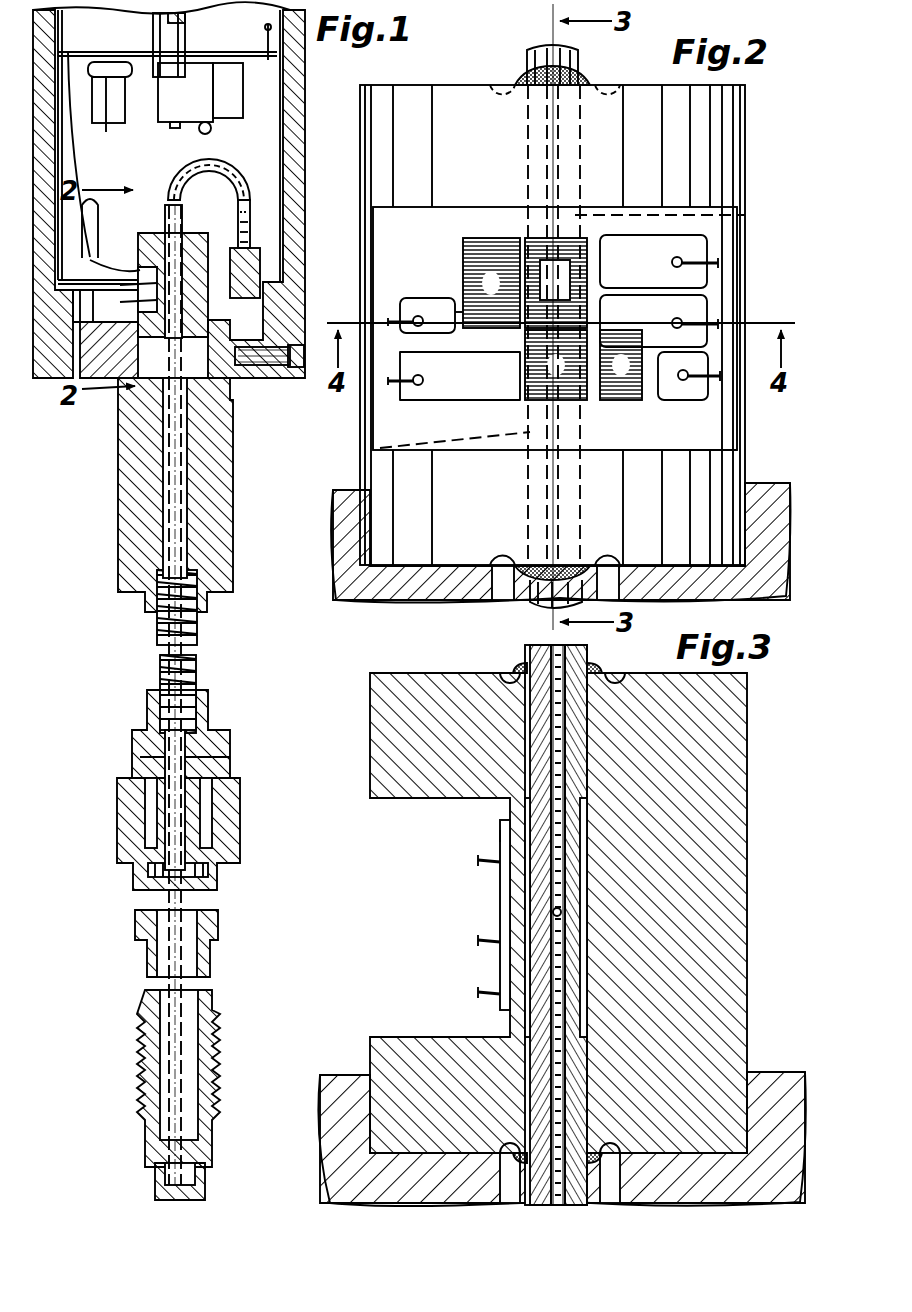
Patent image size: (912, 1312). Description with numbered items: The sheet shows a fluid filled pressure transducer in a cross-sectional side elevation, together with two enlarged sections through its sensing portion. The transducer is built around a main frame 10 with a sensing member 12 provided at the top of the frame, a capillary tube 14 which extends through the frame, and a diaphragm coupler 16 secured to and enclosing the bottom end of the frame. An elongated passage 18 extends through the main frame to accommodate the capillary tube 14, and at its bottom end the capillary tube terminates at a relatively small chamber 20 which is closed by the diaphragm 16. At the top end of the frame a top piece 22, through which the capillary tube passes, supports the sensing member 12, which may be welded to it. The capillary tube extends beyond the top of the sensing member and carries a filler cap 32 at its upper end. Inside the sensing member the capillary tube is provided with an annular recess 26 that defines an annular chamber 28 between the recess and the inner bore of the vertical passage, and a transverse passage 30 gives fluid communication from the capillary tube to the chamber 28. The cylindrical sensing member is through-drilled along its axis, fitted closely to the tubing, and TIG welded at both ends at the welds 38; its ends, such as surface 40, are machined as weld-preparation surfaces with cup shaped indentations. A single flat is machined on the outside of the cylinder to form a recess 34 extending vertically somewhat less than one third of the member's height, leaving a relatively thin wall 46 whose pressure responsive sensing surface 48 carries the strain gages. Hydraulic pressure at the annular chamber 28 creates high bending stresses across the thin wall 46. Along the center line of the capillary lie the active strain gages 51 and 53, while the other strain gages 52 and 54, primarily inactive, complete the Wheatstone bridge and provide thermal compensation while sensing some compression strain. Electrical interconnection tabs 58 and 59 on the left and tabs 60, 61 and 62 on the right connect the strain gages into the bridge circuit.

In FIG. 1, the main frame 10 is at (112, 830).
In FIG. 1, the sensing member 12 is at (157, 232).
In FIG. 2, the sensing member 12 is at (748, 154).
In FIG. 3, the sensing member 12 is at (589, 902).
In FIG. 1, the capillary tube 14 is at (190, 502).
In FIG. 2, the capillary tube 14 is at (580, 50).
In FIG. 3, the capillary tube 14 is at (578, 663).
In FIG. 1, the diaphragm coupler 16 is at (156, 1205).
In FIG. 1, the elongated passage 18 is at (186, 836).
In FIG. 1, the chamber 20 is at (205, 1176).
In FIG. 1, the top piece 22 is at (242, 386).
In FIG. 2, the top piece 22 is at (360, 598).
In FIG. 3, the top piece 22 is at (352, 1075).
In FIG. 2, the annular recess 26 is at (750, 216).
In FIG. 3, the annular recess 26 is at (600, 822).
In FIG. 2, the annular chamber 28 is at (385, 450).
In FIG. 3, the annular chamber 28 is at (600, 855).
In FIG. 2, the transverse passage 30 is at (530, 321).
In FIG. 3, the transverse passage 30 is at (553, 912).
In FIG. 1, the filler cap 32 is at (262, 262).
In FIG. 2, the recess 34 is at (714, 438).
In FIG. 3, the recess 34 is at (442, 911).
In FIG. 3, the welds 38 is at (522, 666).
In FIG. 3, the surface 40 is at (408, 673).
In FIG. 3, the thin wall 46 is at (530, 1010).
In FIG. 2, the pressure responsive sensing surface 48 is at (380, 440).
In FIG. 3, the pressure responsive sensing surface 48 is at (520, 1003).
In FIG. 2, the active strain gage 51 is at (547, 252).
In FIG. 3, the active strain gage 51 is at (500, 846).
In FIG. 2, the strain gage 52 is at (462, 262).
In FIG. 2, the active strain gage 53 is at (525, 392).
In FIG. 2, the strain gage 54 is at (618, 392).
In FIG. 3, the strain gage 54 is at (500, 928).
In FIG. 2, the electrical interconnection tab 58 is at (412, 300).
In FIG. 2, the electrical interconnection tab 59 is at (408, 400).
In FIG. 2, the electrical interconnection tab 60 is at (700, 250).
In FIG. 3, the electrical interconnection tab 60 is at (500, 830).
In FIG. 2, the electrical interconnection tab 61 is at (700, 304).
In FIG. 3, the electrical interconnection tab 61 is at (500, 906).
In FIG. 2, the electrical interconnection tab 62 is at (700, 395).
In FIG. 3, the electrical interconnection tab 62 is at (500, 990).